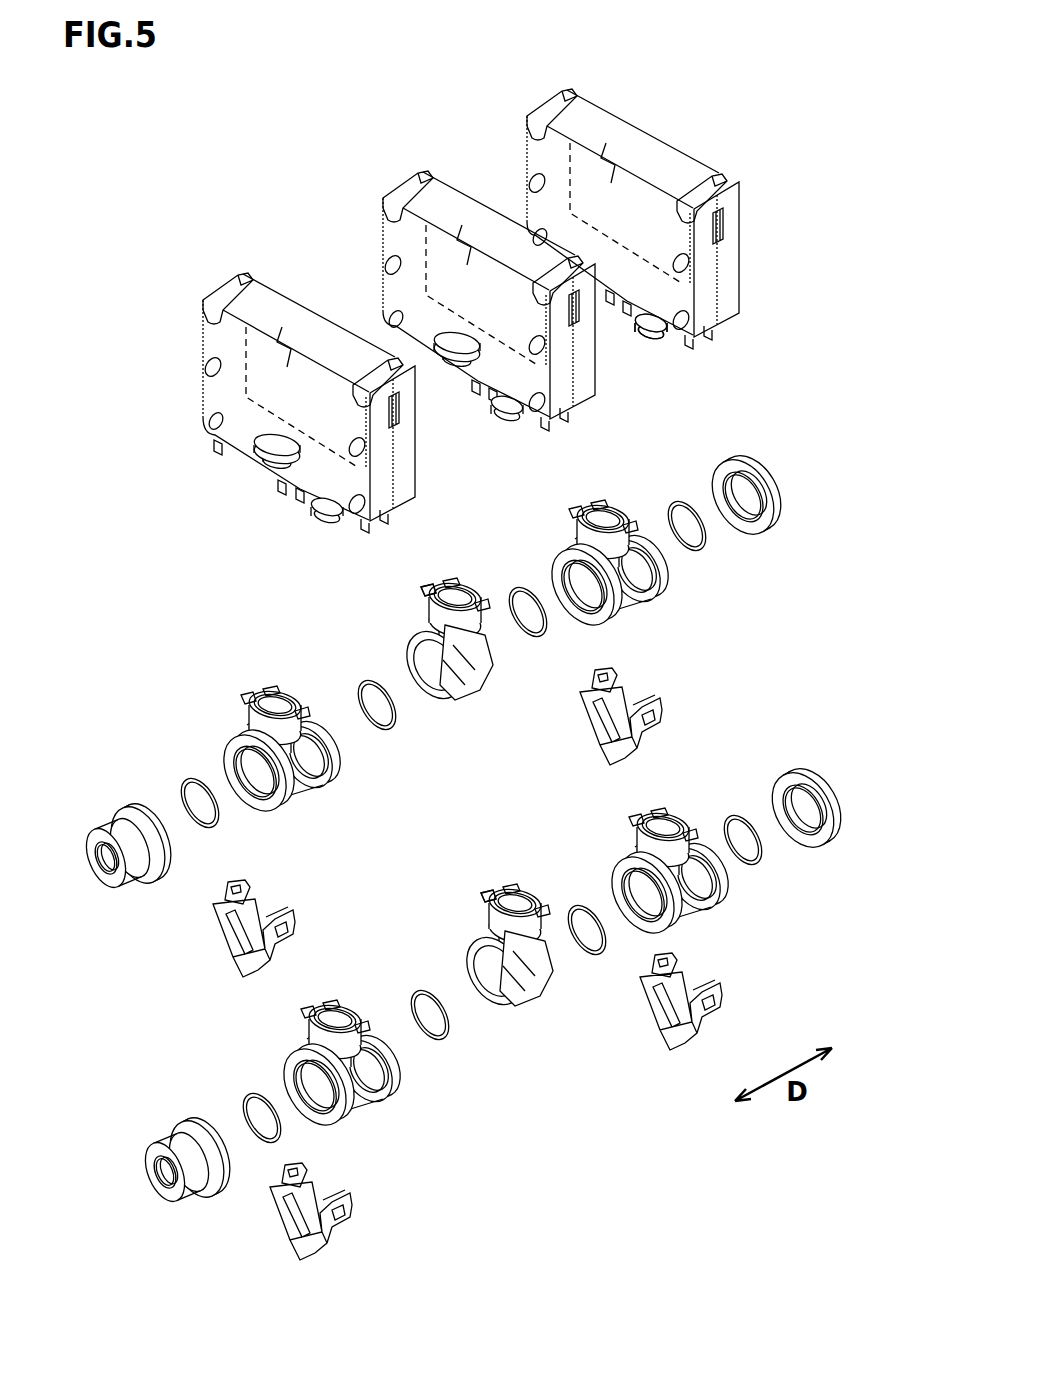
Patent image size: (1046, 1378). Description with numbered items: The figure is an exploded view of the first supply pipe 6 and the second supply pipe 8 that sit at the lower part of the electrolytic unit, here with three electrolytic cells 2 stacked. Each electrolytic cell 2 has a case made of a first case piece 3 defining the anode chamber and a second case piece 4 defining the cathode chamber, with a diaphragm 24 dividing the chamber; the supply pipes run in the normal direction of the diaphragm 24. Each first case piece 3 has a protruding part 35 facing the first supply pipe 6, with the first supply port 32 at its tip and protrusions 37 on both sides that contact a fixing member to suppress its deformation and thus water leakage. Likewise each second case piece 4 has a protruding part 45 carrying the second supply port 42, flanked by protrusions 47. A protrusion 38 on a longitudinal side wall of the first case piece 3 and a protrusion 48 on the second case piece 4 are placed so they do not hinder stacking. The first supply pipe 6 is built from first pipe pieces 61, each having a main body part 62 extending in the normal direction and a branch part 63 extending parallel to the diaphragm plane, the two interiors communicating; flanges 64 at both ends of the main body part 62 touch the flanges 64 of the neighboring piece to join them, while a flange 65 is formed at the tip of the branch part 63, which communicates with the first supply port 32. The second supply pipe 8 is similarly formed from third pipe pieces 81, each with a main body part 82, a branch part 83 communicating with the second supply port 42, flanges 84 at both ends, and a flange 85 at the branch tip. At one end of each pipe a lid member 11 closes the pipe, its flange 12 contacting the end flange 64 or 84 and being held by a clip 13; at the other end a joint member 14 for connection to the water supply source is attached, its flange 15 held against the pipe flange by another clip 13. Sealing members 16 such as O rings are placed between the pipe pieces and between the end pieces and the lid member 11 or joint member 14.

The electrolytic cell 2 is at (463, 320).
The first case piece 3 is at (200, 392).
The second case piece 4 is at (400, 462).
The first supply pipe 6 is at (486, 985).
The second supply pipe 8 is at (441, 674).
The lid member 11 is at (782, 638).
The flange 12 is at (760, 528).
The clip 13 is at (227, 938).
The joint member 14 is at (168, 1007).
The flange 15 is at (152, 880).
The sealing member 16 is at (528, 586).
The diaphragm 24 is at (265, 357).
The first supply port 32 is at (325, 532).
The protruding part 35 is at (510, 414).
The protrusion 37 is at (214, 447).
The protrusion 38 is at (388, 418).
The second supply port 42 is at (267, 473).
The protruding part 45 is at (440, 357).
The protrusion 47 is at (700, 338).
The protrusion 48 is at (724, 216).
The first pipe piece 61 is at (486, 982).
The main body part 62 is at (320, 1083).
The branch part 63 is at (518, 903).
The flange 64 is at (705, 888).
The flange 65 is at (493, 897).
The third pipe piece 81 is at (441, 674).
The main body part 82 is at (260, 770).
The branch part 83 is at (460, 586).
The flange 84 is at (655, 583).
The flange 85 is at (445, 582).